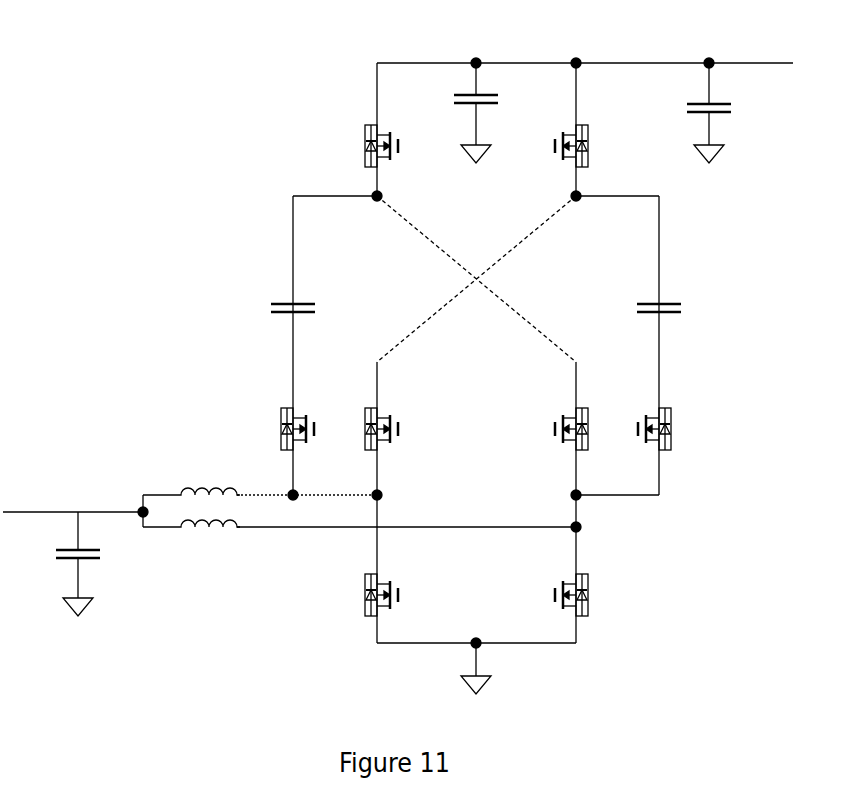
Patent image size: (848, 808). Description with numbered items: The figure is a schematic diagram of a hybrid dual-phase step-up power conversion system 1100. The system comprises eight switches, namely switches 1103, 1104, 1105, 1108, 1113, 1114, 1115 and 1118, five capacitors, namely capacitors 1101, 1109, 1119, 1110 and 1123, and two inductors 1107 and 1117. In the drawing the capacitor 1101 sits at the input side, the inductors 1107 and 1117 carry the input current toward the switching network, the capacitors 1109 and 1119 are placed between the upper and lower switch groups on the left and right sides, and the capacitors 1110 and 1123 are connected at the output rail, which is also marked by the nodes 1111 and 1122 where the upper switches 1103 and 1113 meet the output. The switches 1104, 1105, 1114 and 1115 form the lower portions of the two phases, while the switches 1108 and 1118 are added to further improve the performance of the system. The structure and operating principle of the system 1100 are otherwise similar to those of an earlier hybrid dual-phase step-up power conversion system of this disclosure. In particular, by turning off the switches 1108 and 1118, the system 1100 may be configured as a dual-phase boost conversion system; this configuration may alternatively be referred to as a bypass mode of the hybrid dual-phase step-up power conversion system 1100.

The hybrid dual-phase step-up power conversion system 1100 is at (346, 60).
The capacitor 1101 is at (70, 560).
The switch 1103 is at (368, 124).
The switch 1104 is at (369, 408).
The switch 1105 is at (369, 574).
The inductor 1107 is at (210, 488).
The switch 1108 is at (285, 408).
The capacitor 1109 is at (290, 302).
The capacitor 1110 is at (493, 98).
The output node 1111 is at (472, 61).
The switch 1113 is at (575, 124).
The switch 1114 is at (584, 408).
The switch 1115 is at (584, 574).
The inductor 1117 is at (206, 534).
The switch 1118 is at (667, 408).
The capacitor 1119 is at (663, 302).
The output node 1122 is at (713, 61).
The capacitor 1123 is at (720, 102).